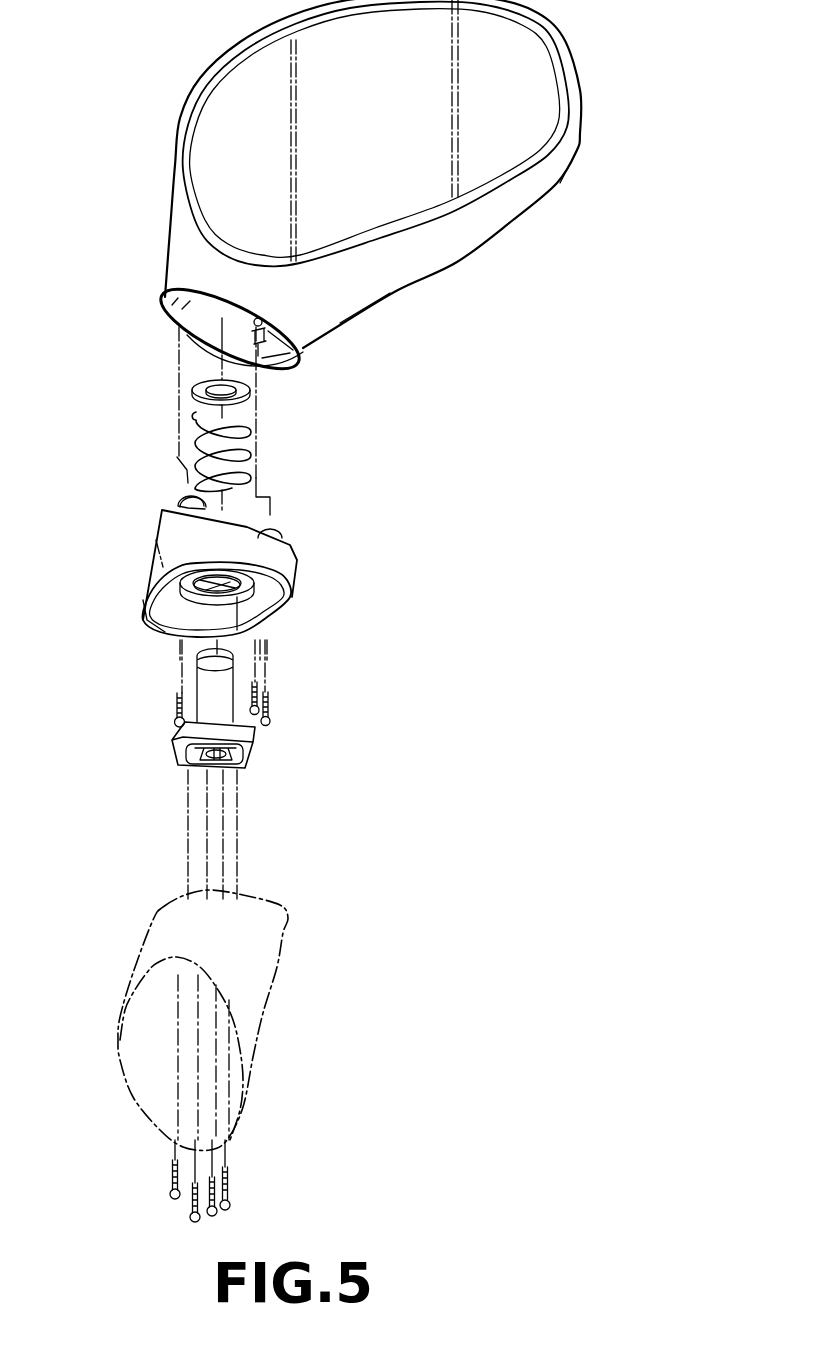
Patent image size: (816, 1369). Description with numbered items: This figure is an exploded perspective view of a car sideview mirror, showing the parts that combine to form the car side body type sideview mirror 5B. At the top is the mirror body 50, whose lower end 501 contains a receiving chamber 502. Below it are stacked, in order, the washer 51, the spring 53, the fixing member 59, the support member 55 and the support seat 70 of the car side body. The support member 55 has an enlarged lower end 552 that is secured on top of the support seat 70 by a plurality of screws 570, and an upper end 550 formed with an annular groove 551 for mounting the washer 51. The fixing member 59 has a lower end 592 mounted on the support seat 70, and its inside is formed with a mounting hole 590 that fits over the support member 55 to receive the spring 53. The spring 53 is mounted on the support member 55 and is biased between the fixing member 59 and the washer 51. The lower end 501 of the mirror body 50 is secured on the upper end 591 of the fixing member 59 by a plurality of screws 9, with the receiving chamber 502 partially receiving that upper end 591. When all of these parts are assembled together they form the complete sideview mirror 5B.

The mirror body 50 is at (490, 230).
The lower end of mirror body 501 is at (167, 303).
The receiving chamber 502 is at (197, 330).
The washer 51 is at (250, 395).
The spring 53 is at (250, 462).
The fixing member 59 is at (297, 563).
The upper end of fixing member 591 is at (173, 503).
The lower end of fixing member 592 is at (147, 613).
The mounting hole 590 is at (233, 598).
The upper end of support member 550 is at (193, 660).
The annular groove 551 is at (180, 686).
The support member 55 is at (177, 727).
The enlarged lower end of support member 552 is at (253, 731).
The screws 9 is at (270, 707).
The support seat 70 is at (277, 967).
The screws 570 is at (233, 1190).
The car side body type sideview mirror 5B is at (515, 483).